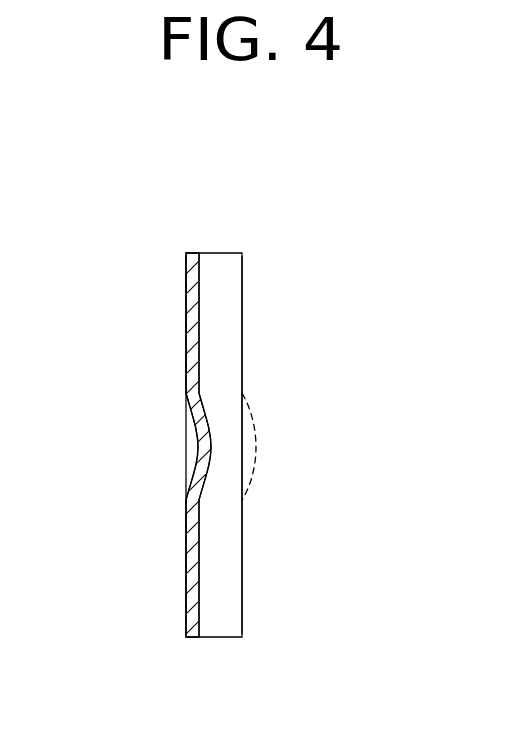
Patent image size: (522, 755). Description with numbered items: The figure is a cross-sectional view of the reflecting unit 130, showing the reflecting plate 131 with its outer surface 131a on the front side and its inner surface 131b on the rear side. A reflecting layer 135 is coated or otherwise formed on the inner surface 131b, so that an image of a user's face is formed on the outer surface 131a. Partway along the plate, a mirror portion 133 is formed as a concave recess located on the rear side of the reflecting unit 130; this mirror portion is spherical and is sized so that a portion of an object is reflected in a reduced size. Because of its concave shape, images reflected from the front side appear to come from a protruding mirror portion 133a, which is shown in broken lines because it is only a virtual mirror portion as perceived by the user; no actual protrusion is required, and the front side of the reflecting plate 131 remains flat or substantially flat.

The reflecting unit 130 is at (92, 236).
The reflecting plate 131 is at (218, 633).
The outer surface 131a is at (244, 271).
The inner surface 131b is at (186, 272).
The mirror portion 133 is at (206, 444).
The protruding mirror portion 133a is at (256, 446).
The reflecting layer 135 is at (187, 315).